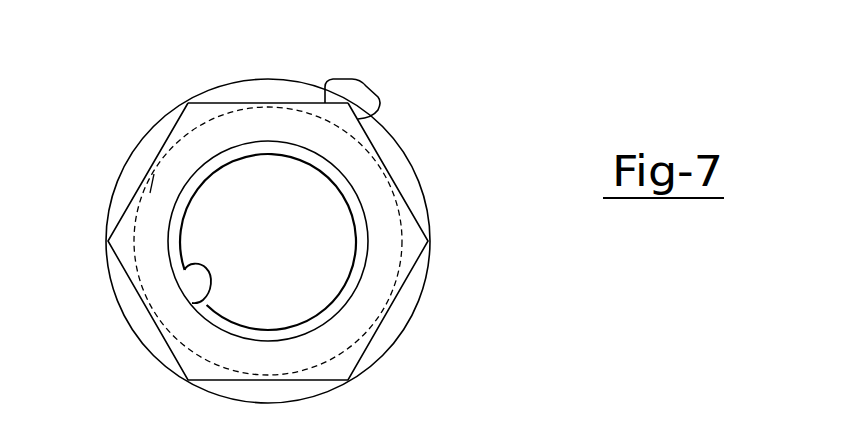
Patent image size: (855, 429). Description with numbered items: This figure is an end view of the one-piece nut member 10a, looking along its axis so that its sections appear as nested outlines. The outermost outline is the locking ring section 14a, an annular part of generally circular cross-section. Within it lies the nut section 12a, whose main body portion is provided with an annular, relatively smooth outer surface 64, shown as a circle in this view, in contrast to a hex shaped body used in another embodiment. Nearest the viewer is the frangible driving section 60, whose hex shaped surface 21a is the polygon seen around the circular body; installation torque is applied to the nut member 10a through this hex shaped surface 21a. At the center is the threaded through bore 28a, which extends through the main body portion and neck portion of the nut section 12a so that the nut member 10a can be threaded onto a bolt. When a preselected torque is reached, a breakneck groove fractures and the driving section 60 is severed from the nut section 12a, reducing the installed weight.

The nut member 10a is at (424, 111).
The locking ring section 14a is at (141, 154).
The frangible driving section 60 is at (195, 112).
The hex shaped surface 21a is at (358, 78).
The nut section 12a is at (403, 208).
The annular relatively smooth outer surface 64 is at (419, 300).
The threaded through bore 28a is at (206, 304).